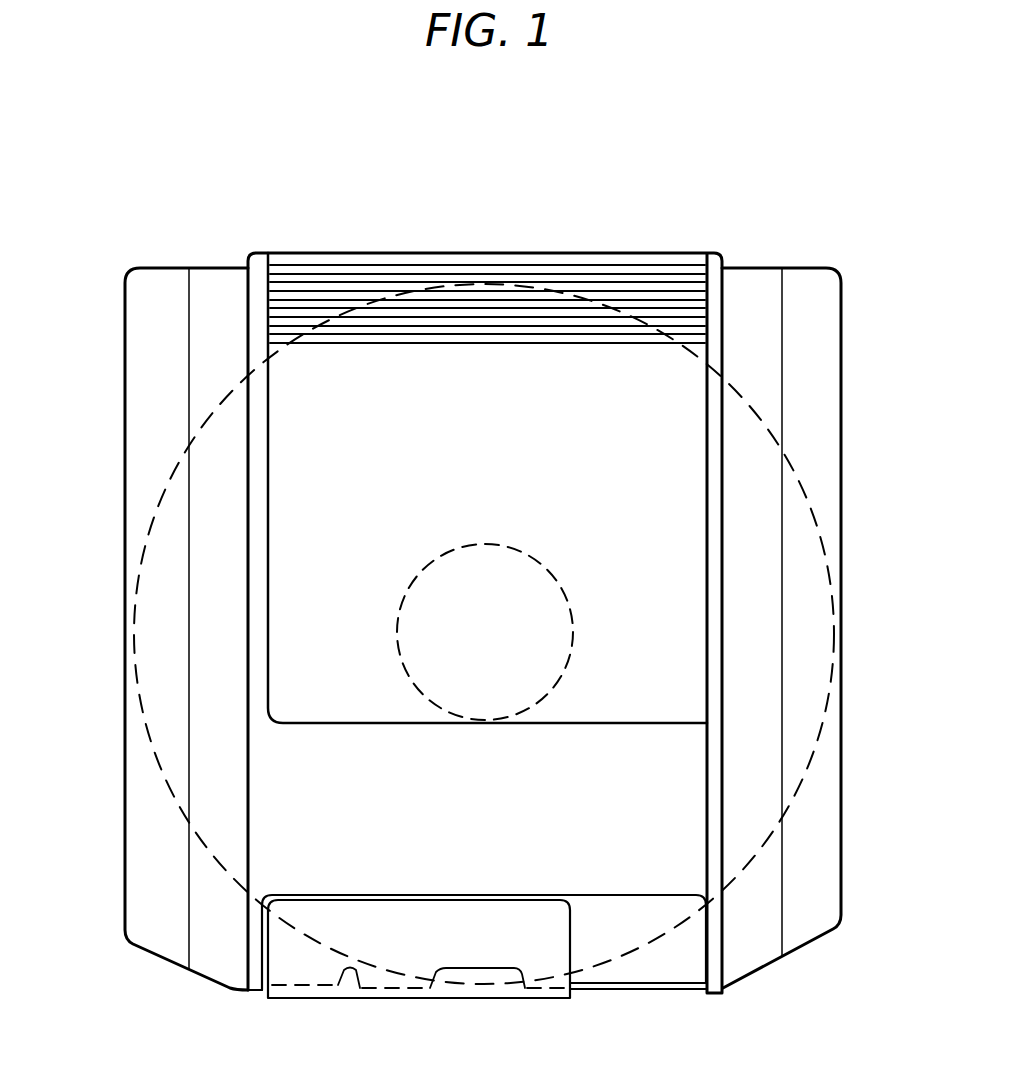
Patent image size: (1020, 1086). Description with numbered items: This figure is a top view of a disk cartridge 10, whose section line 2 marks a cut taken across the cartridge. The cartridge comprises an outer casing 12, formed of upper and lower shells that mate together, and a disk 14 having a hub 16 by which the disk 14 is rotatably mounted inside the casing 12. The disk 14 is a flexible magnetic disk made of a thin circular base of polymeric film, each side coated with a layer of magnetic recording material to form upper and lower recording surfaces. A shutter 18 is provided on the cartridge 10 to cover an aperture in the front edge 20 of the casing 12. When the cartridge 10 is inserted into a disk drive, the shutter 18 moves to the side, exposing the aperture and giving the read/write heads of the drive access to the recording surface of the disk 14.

The disk cartridge 10 is at (221, 197).
The outer casing 12 is at (745, 282).
The disk 14 is at (803, 702).
The hub 16 is at (493, 568).
The shutter 18 is at (330, 999).
The front edge 20 is at (614, 991).
The section line 2- 2 is at (53, 638).